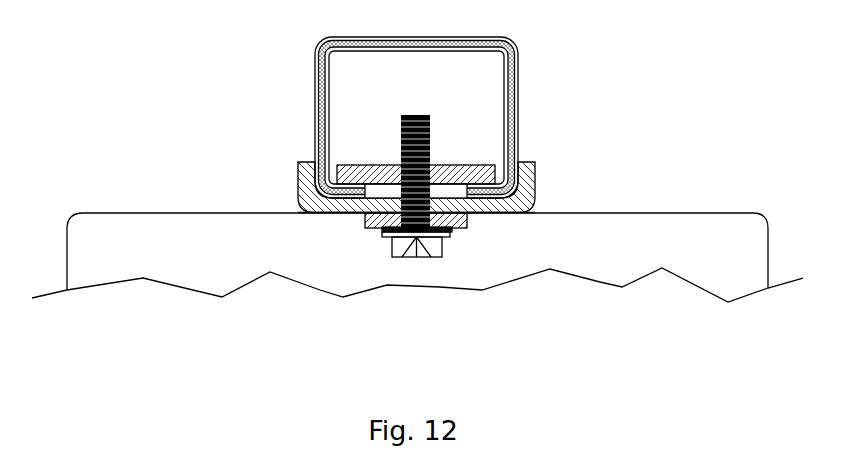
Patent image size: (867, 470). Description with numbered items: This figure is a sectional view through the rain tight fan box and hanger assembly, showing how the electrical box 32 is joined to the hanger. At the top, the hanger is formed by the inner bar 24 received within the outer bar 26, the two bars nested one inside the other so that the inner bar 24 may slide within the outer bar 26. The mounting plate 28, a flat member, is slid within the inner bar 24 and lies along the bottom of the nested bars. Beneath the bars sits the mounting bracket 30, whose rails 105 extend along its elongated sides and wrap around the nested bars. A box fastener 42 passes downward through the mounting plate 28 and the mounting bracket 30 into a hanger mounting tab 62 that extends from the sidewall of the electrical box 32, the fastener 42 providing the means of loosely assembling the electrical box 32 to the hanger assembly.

The inner bar 24 is at (505, 118).
The outer bar 26 is at (515, 68).
The mounting plate 28 is at (456, 165).
The mounting bracket 30 is at (488, 205).
The rain-tight electrical box 32 is at (603, 257).
The box fastener 42 is at (432, 257).
The hanger mounting tab 62 is at (373, 220).
The rail 105 is at (535, 171).